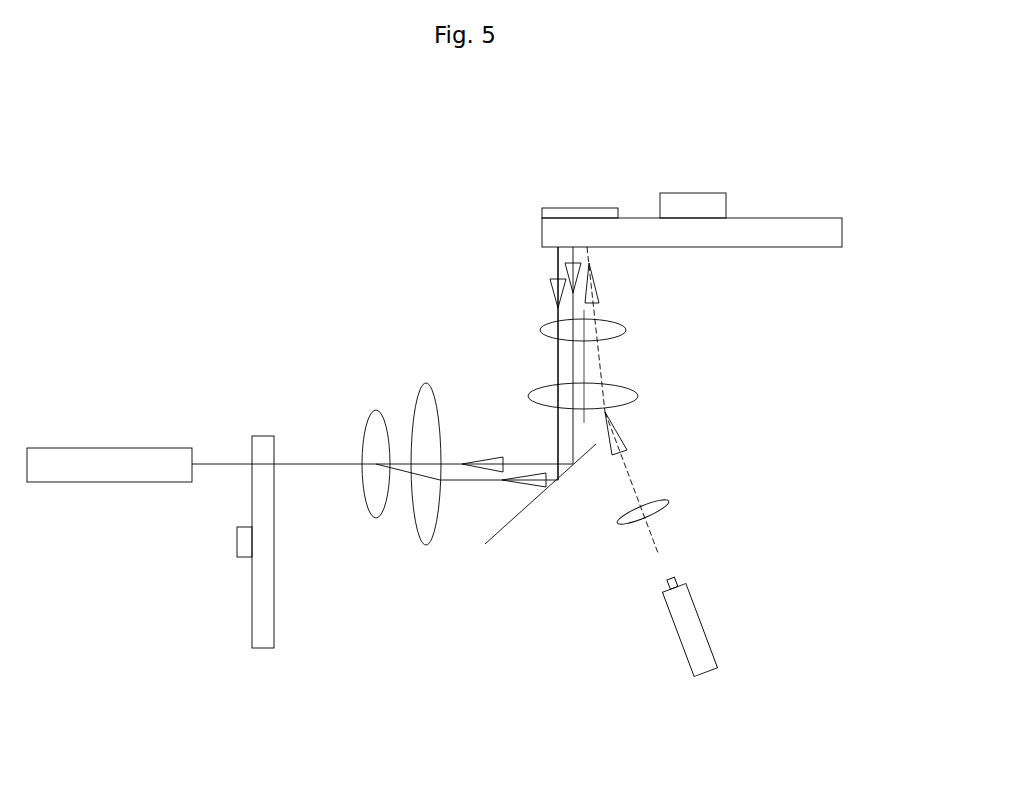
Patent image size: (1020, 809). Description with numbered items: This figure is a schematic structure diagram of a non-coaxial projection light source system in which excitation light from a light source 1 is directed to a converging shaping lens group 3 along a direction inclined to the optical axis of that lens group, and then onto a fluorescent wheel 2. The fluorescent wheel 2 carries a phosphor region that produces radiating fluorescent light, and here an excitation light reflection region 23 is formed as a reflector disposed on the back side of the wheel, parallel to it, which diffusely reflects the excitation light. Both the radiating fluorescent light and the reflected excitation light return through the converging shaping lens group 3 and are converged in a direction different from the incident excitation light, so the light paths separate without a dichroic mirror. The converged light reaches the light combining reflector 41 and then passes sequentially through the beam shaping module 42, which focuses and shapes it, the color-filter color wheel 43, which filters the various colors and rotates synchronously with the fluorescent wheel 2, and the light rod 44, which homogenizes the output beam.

The light source 1 is at (693, 637).
The fluorescent wheel 2 is at (772, 228).
The converging shaping lens group 3 is at (608, 361).
The excitation light reflection region 23 is at (573, 213).
The light combining reflector 41 is at (507, 527).
The beam shaping module 42 is at (400, 530).
The color-filter color wheel 43 is at (263, 628).
The light rod 44 is at (127, 470).